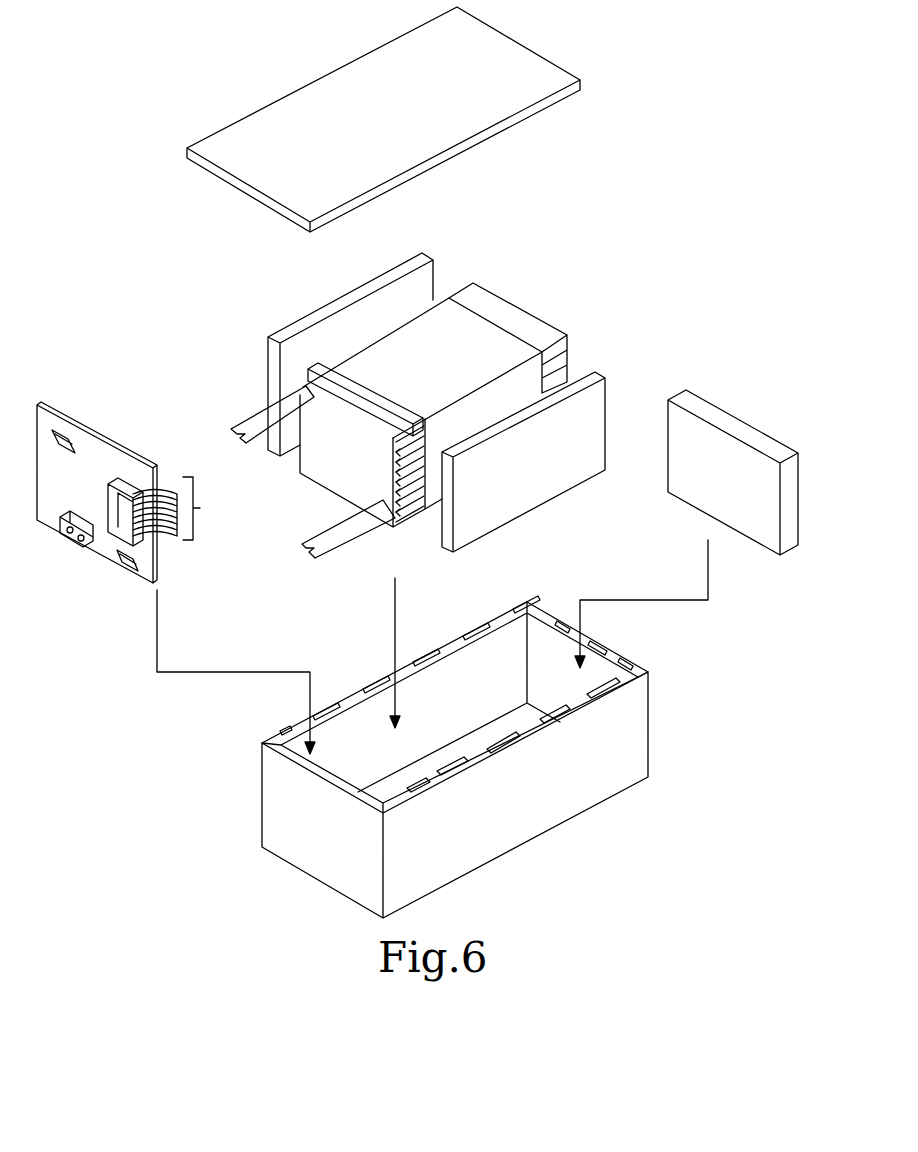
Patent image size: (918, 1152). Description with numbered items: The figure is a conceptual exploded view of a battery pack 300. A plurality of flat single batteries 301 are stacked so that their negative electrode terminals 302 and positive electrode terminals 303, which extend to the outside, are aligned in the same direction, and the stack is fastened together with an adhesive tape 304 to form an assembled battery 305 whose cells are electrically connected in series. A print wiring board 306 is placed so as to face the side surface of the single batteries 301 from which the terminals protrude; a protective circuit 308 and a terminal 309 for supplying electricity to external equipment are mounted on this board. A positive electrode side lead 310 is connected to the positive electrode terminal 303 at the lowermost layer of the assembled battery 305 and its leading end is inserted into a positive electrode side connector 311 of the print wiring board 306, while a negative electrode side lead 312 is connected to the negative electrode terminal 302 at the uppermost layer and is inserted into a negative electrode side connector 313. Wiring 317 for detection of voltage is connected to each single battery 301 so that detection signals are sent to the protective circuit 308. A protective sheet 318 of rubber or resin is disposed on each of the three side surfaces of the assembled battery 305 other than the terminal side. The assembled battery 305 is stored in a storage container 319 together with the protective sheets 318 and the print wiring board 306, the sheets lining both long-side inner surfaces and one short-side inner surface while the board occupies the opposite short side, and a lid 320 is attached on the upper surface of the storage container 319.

The battery pack 300 is at (106, 121).
The single battery 301 is at (562, 362).
The negative electrode terminal 302 is at (306, 393).
The positive electrode terminal 303 is at (373, 427).
The adhesive tape 304 is at (492, 352).
The assembled battery 305 is at (386, 326).
The print wiring board 306 is at (187, 471).
The protective circuit 308 is at (120, 478).
The terminal for supply of electricity to external equipment 309 is at (78, 556).
The positive electrode side lead 310 is at (338, 545).
The positive electrode side connector 311 is at (158, 566).
The negative electrode side lead 312 is at (240, 426).
The negative electrode side connector 313 is at (63, 436).
The wiring for detection of voltage 317 is at (236, 501).
The protective sheet 318 is at (372, 316).
The storage container 319 is at (637, 735).
The lid 320 is at (528, 73).